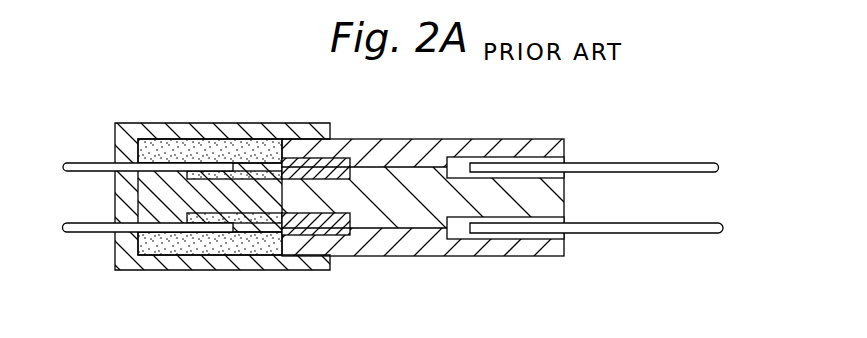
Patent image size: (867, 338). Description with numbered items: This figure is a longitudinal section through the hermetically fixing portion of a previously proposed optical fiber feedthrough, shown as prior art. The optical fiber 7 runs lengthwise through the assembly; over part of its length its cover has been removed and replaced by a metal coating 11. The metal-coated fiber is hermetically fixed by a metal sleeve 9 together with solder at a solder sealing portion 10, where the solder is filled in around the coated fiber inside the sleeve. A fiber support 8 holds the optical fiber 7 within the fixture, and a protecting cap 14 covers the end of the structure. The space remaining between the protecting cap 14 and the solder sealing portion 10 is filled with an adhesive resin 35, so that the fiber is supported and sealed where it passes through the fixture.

The optical fiber 7 is at (80, 162).
The fiber support 8 is at (163, 180).
The metal sleeve 9 is at (390, 140).
The solder sealing portion 10 is at (303, 158).
The metal coating 11 is at (255, 160).
The protecting cap 14 is at (128, 128).
The adhesive resin 35 is at (212, 148).